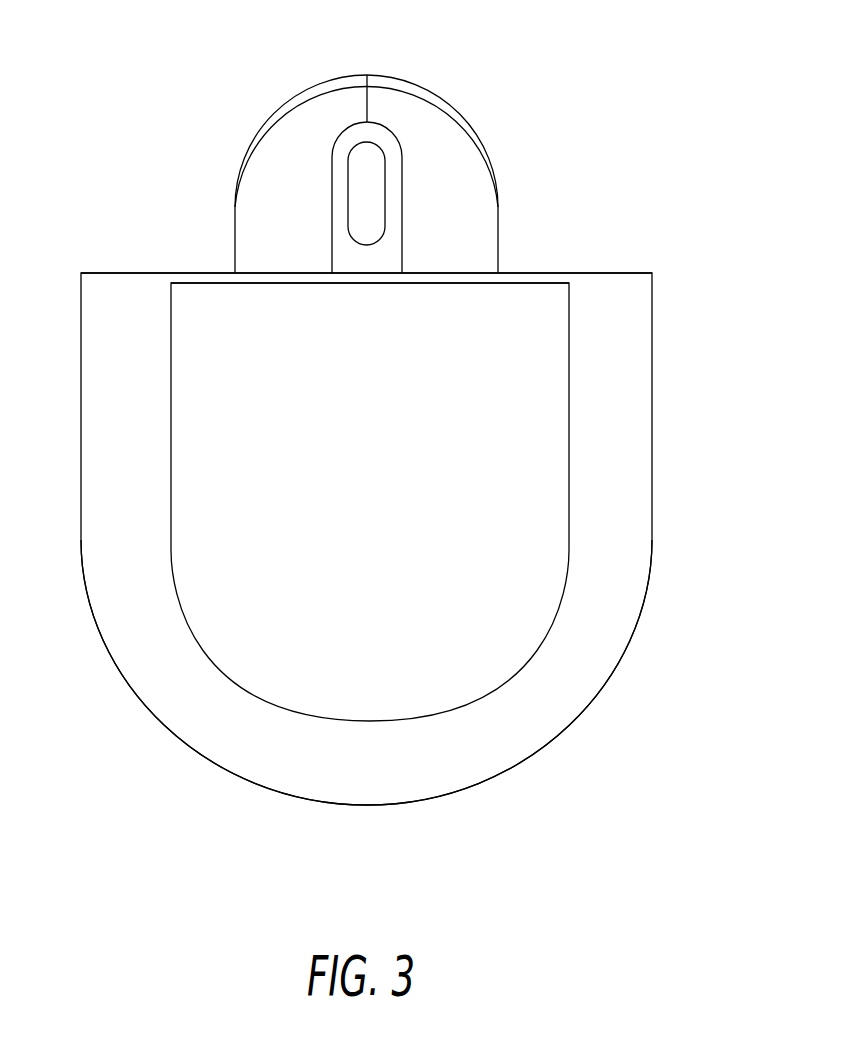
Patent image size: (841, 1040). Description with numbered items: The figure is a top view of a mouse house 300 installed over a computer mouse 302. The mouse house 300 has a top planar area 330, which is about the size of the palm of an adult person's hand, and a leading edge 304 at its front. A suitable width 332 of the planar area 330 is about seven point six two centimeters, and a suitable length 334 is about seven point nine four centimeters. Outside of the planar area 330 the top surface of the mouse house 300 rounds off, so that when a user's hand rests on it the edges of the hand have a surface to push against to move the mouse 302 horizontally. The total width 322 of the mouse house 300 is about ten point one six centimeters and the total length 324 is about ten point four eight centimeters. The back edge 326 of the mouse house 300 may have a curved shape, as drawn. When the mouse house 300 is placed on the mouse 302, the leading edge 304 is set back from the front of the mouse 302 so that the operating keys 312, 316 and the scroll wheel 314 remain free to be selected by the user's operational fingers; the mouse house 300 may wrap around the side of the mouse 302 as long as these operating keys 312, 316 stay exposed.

The mouse house 300 is at (590, 244).
The computer mouse 302 is at (497, 112).
The leading edge 304 is at (140, 272).
The operating key 312 is at (266, 117).
The scroll wheel 314 is at (350, 152).
The operating key 316 is at (443, 97).
The total width 322 is at (81, 645).
The total length 324 is at (722, 806).
The back edge 326 is at (163, 738).
The top planar area 330 is at (284, 405).
The width of the planar area 332 is at (171, 625).
The length of the planar area 334 is at (297, 723).